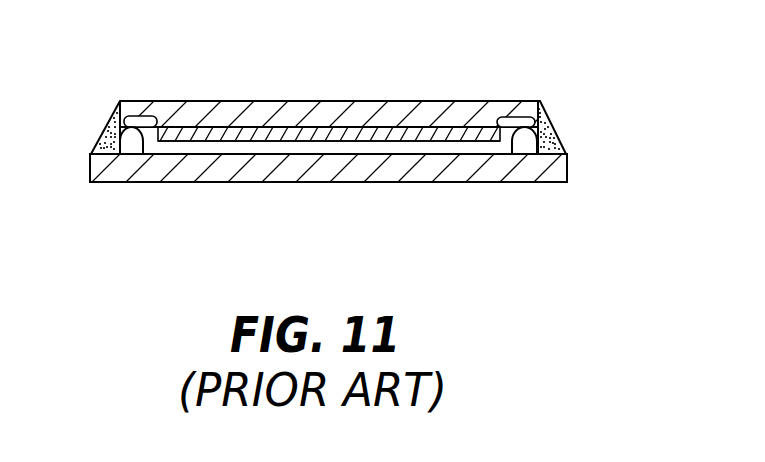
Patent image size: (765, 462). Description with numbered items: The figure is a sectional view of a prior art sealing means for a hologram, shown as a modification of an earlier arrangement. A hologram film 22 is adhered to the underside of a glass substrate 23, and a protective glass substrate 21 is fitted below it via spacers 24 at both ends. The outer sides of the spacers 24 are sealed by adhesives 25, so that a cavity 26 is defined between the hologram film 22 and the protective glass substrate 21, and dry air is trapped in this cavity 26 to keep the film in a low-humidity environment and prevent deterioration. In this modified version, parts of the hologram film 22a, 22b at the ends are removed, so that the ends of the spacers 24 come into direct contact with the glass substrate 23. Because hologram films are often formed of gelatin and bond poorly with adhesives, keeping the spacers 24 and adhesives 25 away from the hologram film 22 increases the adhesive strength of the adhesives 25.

The protective glass substrate 21 is at (391, 172).
The hologram film 22 is at (388, 128).
The removed part of hologram film 22a is at (143, 120).
The removed part of hologram film 22b is at (516, 119).
The glass substrate 23 is at (310, 101).
The spacers 24 is at (128, 148).
The adhesives 25 is at (98, 140).
The cavity 26 is at (290, 150).